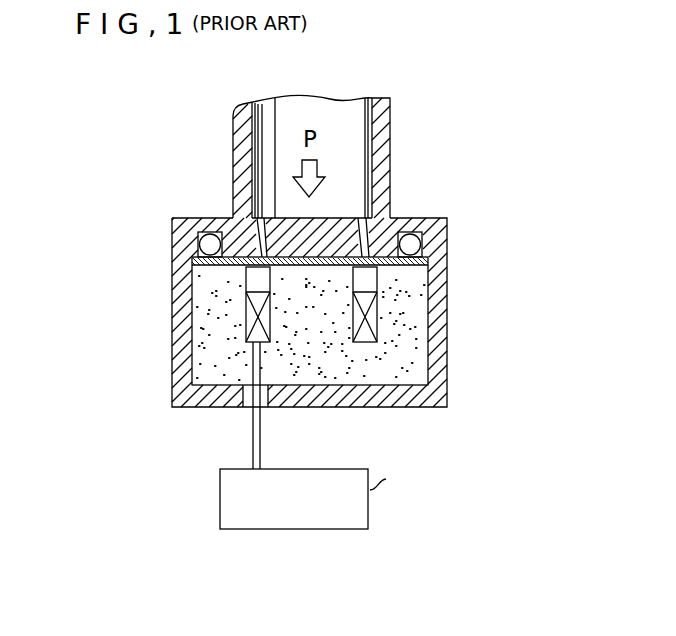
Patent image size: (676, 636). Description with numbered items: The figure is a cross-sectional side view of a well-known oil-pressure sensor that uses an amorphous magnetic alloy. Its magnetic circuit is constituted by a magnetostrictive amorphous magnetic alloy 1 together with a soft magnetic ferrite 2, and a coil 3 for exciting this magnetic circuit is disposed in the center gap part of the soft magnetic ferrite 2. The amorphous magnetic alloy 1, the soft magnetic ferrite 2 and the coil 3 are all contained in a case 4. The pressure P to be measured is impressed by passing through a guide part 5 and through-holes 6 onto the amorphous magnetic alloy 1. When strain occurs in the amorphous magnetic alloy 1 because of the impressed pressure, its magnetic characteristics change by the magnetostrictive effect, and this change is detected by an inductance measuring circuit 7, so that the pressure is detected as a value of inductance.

The amorphous magnetic alloy 1 is at (443, 252).
The soft magnetic ferrite 2 is at (417, 320).
The coil 3 is at (377, 327).
The case 4 is at (443, 392).
The guide part 5 is at (318, 168).
The through-holes 6 is at (260, 243).
The inductance measuring circuit 7 is at (327, 532).